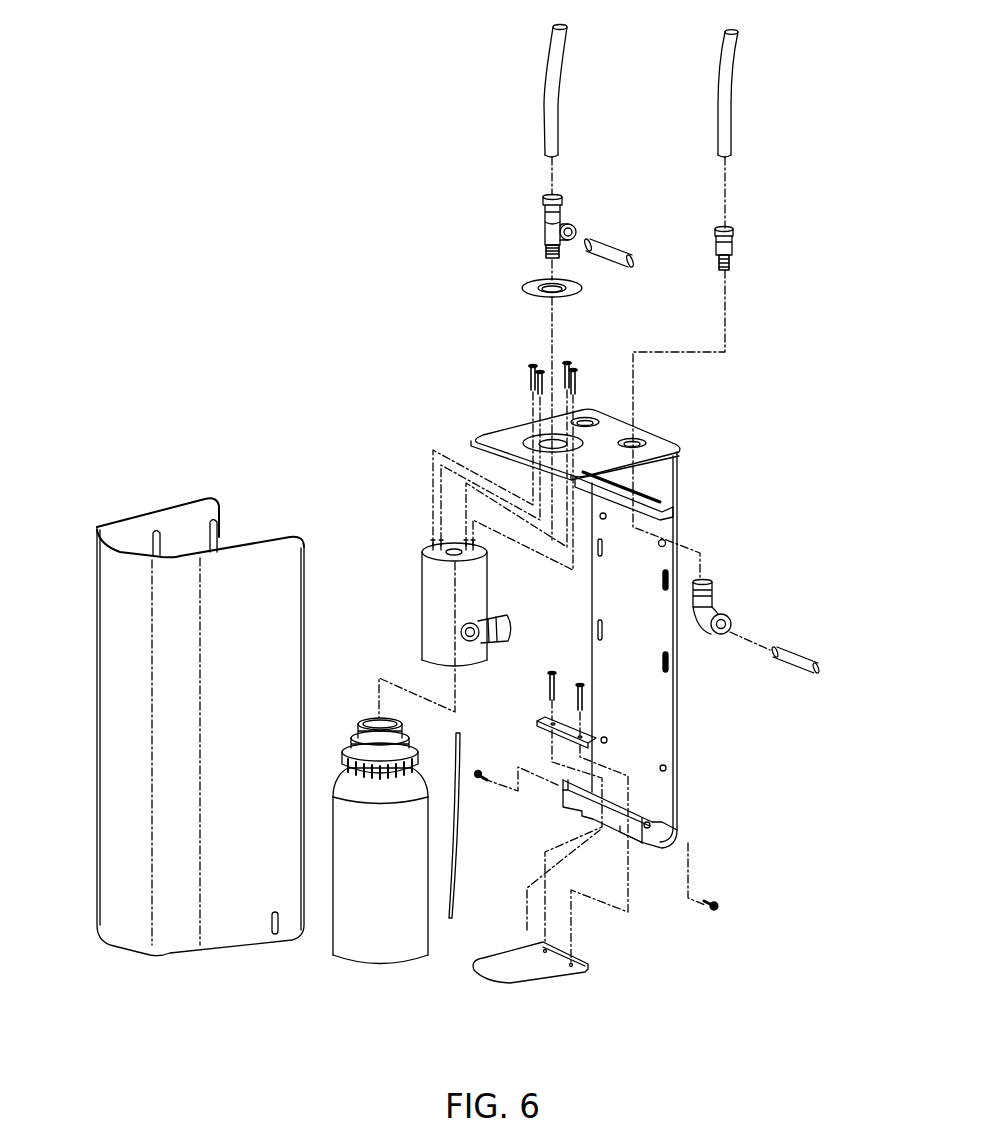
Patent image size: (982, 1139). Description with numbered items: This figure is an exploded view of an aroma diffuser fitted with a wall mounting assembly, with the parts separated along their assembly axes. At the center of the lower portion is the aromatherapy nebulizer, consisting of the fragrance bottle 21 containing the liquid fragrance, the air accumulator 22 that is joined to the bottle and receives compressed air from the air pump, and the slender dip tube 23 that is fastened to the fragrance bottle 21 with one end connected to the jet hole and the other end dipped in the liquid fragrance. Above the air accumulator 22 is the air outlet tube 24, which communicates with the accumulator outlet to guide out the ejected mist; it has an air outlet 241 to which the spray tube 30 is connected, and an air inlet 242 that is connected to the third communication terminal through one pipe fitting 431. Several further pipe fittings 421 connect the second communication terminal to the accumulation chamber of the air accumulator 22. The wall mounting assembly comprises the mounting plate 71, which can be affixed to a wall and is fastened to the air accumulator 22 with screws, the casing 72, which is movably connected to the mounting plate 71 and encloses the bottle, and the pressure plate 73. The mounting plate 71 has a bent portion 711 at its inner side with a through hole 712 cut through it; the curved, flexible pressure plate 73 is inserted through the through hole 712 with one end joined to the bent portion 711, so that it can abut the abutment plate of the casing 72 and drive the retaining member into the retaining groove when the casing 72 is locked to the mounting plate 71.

The fragrance bottle 21 is at (367, 948).
The air accumulator 22 is at (430, 602).
The dip tube 23 is at (460, 860).
The air outlet tube 24 is at (521, 215).
The air outlet 241 is at (548, 193).
The air inlet 242 is at (595, 187).
The spray tube 30 is at (557, 60).
The pipe fittings 421 is at (730, 73).
The pipe fitting 431 is at (612, 253).
The mounting plate 71 is at (680, 750).
The bent portion 711 is at (660, 850).
The through hole 712 is at (613, 828).
The casing 72 is at (133, 527).
The pressure plate 73 is at (500, 970).